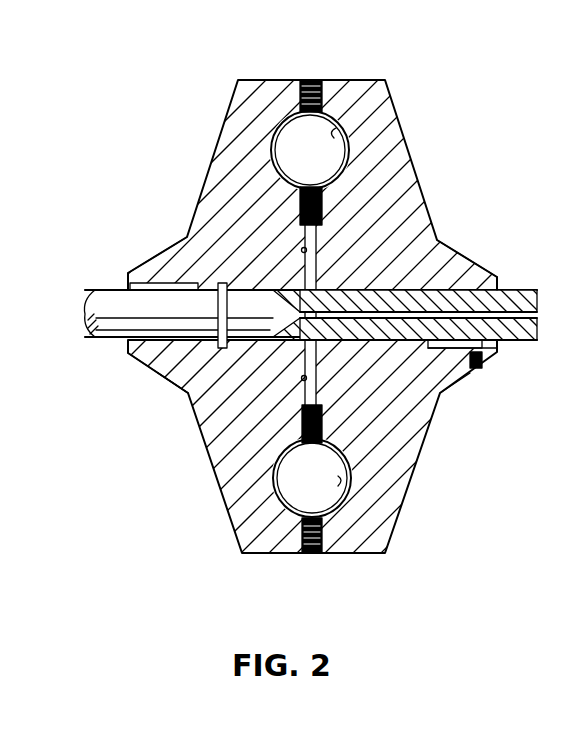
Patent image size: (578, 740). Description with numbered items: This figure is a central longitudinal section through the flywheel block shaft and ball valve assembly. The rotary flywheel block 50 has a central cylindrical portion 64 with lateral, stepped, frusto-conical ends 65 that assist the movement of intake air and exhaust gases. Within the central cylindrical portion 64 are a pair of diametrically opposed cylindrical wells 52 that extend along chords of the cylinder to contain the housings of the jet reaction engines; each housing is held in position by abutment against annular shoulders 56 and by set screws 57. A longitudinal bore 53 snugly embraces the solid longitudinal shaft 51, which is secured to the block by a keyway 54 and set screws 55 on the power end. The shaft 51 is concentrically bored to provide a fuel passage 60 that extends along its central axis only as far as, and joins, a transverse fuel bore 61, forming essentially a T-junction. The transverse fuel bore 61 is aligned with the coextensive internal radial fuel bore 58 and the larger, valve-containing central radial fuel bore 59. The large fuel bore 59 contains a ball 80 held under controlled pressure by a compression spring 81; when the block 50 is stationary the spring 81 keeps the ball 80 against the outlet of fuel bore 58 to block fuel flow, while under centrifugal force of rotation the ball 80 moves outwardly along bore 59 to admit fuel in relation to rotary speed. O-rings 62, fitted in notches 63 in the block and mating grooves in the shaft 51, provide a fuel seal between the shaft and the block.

The rotary flywheel block 50 is at (358, 70).
The longitudinal shaft 51 is at (525, 299).
The cylindrical wells 52 is at (325, 156).
The longitudinal bore 53 is at (500, 291).
The keyway 54 is at (490, 348).
The set screws 55 is at (474, 366).
The annular shoulders 56 is at (335, 125).
The set screws 57 is at (299, 80).
The internal radial fuel bore 58 is at (303, 228).
The central radial fuel bore 59 is at (322, 210).
The fuel passage 60 is at (530, 320).
The transverse fuel bore 61 is at (187, 394).
The O-rings 62 is at (127, 351).
The notches 63 is at (160, 377).
The central cylindrical portion 64 is at (249, 80).
The stepped frusto-conical ends 65 is at (162, 256).
The ball 80 is at (301, 215).
The compression spring 81 is at (300, 198).